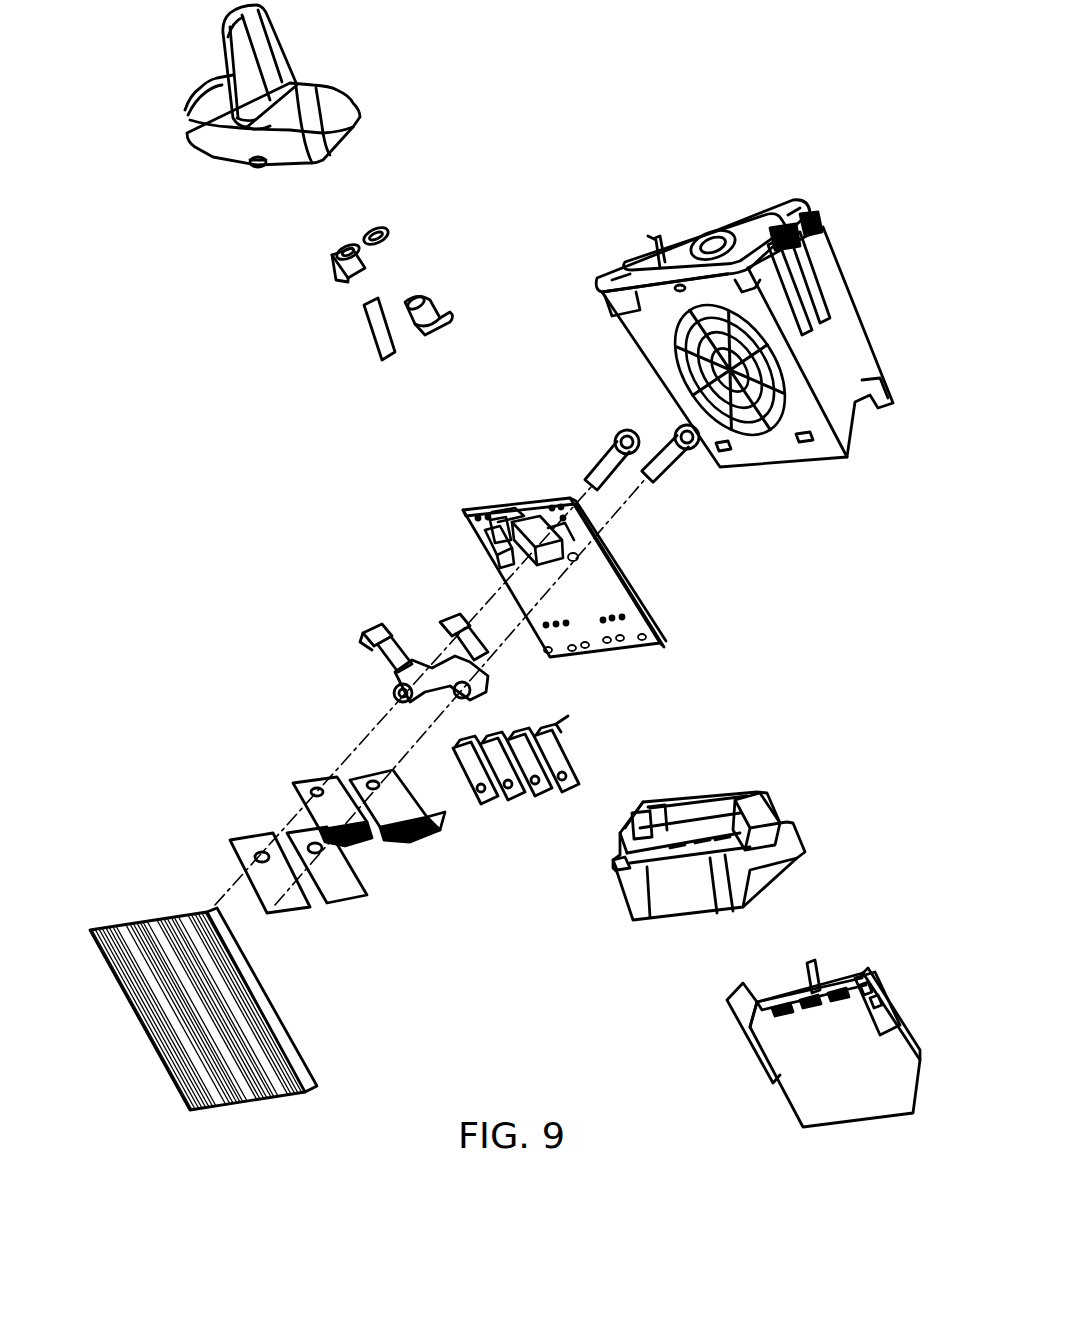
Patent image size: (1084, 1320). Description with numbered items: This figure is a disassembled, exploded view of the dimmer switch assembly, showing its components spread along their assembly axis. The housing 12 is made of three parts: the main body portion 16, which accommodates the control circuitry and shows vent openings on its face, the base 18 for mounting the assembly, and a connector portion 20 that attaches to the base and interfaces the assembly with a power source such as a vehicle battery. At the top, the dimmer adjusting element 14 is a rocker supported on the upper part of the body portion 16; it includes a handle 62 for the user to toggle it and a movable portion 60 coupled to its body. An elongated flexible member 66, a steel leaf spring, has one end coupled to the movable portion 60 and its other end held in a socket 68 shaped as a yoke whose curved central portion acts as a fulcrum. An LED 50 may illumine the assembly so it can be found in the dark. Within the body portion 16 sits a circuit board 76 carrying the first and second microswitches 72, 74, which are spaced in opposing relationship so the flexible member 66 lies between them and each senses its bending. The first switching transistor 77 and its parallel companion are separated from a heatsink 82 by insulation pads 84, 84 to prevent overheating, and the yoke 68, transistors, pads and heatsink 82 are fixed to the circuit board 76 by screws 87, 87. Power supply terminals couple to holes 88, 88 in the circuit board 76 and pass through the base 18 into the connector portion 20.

The housing 12 is at (768, 328).
The dimmer adjusting element 14 is at (318, 72).
The body portion 16 is at (850, 356).
The base 18 is at (797, 785).
The connector portion 20 is at (917, 1083).
The LED 50 is at (420, 300).
The movable portion 60 is at (332, 268).
The handle 62 is at (253, 48).
The elongated flexible member 66 is at (372, 341).
The socket 68 is at (383, 658).
The first microswitch 72 is at (538, 540).
The second microswitch 74 is at (487, 553).
The circuit board 76 is at (632, 592).
The first switching transistor 77 is at (313, 783).
The heatsink 82 is at (283, 1040).
The insulation pad 84 is at (240, 843).
The screw 87 is at (610, 457).
The hole 88 is at (605, 643).